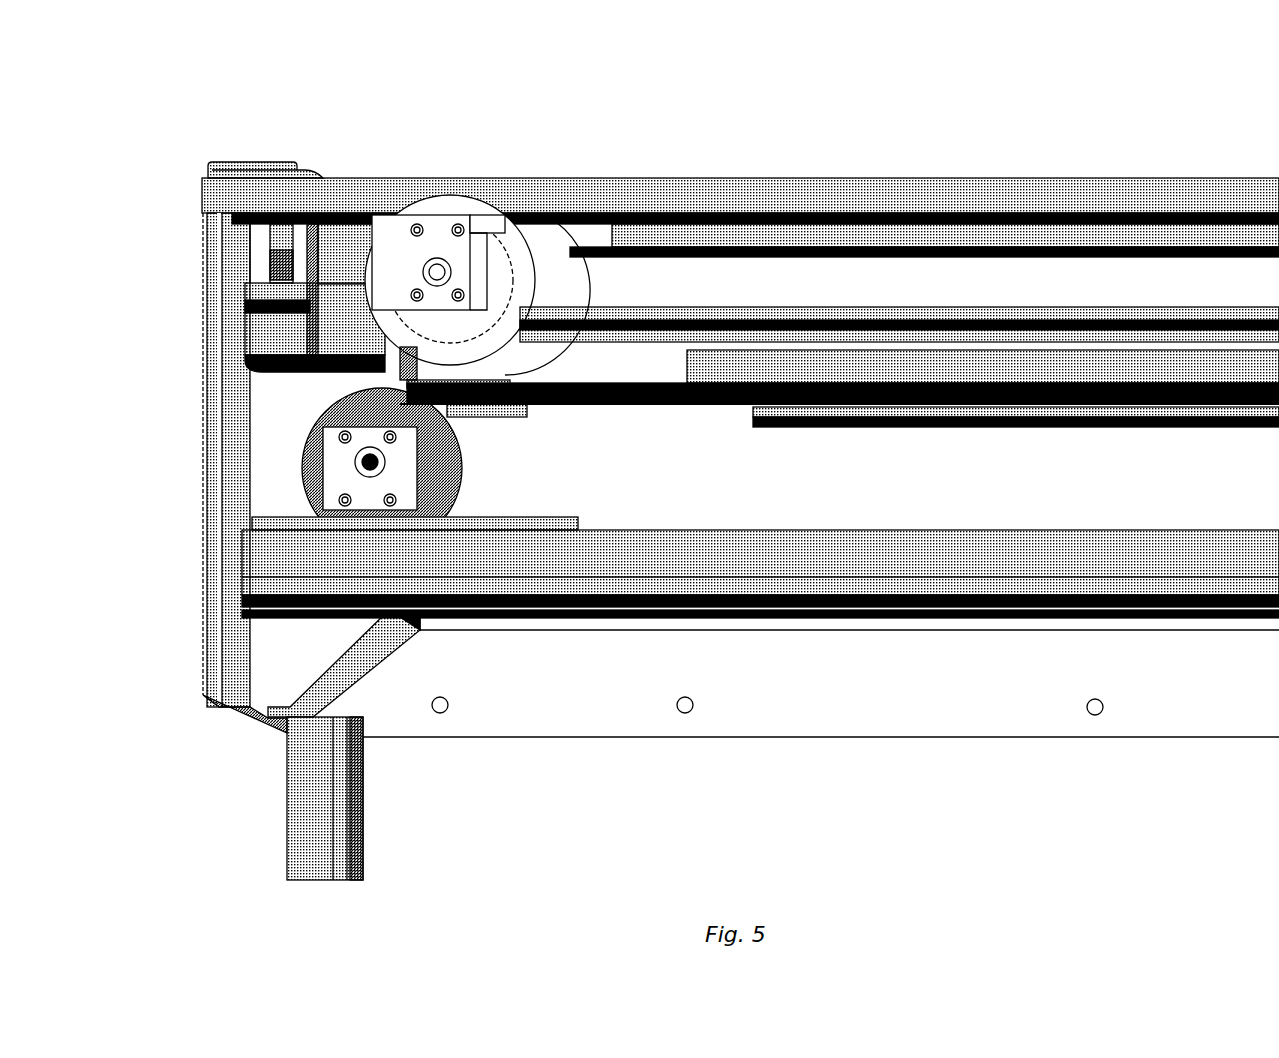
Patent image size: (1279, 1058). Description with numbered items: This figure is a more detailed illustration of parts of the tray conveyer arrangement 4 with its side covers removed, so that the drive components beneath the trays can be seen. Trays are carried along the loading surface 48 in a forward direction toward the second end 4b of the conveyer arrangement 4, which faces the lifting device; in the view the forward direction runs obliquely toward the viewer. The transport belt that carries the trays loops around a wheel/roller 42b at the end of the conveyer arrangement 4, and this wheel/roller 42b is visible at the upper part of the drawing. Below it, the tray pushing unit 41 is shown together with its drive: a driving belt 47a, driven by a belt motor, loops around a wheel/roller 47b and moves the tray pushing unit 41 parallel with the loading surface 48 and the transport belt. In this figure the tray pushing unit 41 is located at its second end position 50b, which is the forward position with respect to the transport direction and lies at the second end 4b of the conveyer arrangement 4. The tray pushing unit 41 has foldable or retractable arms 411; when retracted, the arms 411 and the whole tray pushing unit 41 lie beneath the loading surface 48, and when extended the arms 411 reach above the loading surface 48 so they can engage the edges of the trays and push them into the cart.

The conveyer arrangement 4 is at (156, 83).
The second end 4b is at (204, 395).
The tray pushing unit 41 is at (238, 305).
The arms 411 is at (268, 156).
The wheel/roller 42b is at (516, 248).
The driving belt 47a is at (656, 405).
The wheel/roller 47b is at (458, 456).
The loading surface 48 is at (862, 176).
The second end position 50b is at (249, 246).